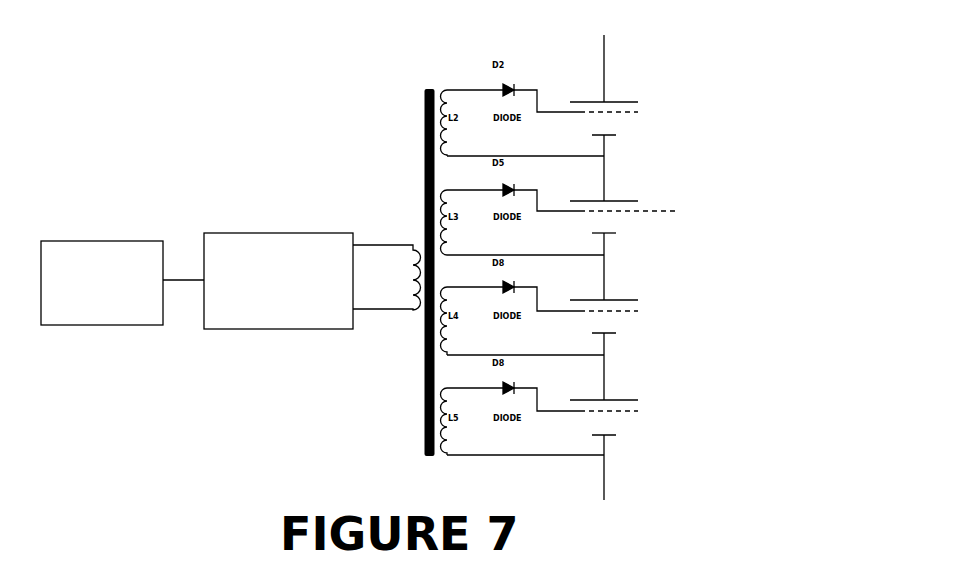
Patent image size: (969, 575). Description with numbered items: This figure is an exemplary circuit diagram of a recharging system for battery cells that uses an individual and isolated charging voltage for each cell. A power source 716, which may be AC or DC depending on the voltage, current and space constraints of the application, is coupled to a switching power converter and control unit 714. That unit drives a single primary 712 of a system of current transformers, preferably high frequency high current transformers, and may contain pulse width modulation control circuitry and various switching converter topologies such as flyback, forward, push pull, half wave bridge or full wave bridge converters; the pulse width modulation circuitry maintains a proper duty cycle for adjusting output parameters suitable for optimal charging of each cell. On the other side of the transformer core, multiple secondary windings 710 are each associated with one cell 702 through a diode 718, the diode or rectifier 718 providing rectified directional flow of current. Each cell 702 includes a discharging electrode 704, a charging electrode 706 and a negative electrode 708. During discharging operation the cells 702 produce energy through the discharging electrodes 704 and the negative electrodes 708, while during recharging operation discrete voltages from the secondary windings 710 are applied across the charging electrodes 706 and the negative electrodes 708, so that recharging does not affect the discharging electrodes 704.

The cell 702 is at (673, 123).
The discharging electrode 704 is at (639, 201).
The charging electrode 706 is at (673, 212).
The negative electrode 708 is at (615, 235).
The secondary winding 710 is at (450, 130).
The primary 712 is at (412, 274).
The switching power converter and control unit 714 is at (267, 330).
The power source 716 is at (108, 325).
The diode 718 is at (507, 89).